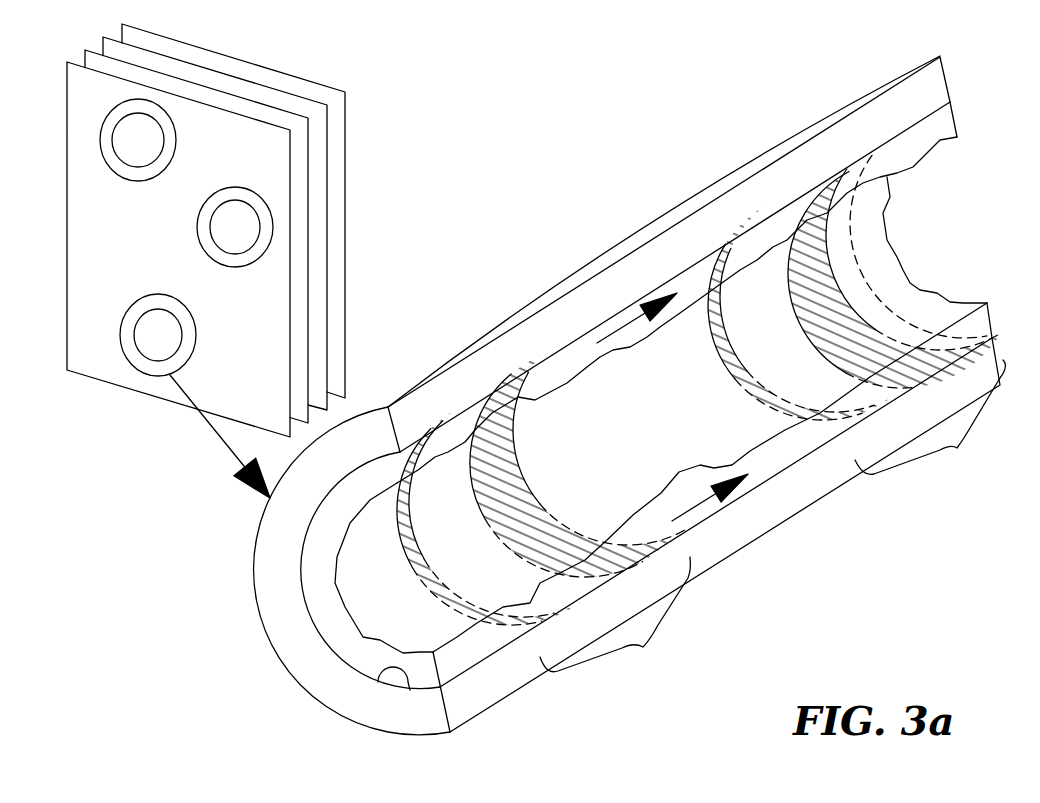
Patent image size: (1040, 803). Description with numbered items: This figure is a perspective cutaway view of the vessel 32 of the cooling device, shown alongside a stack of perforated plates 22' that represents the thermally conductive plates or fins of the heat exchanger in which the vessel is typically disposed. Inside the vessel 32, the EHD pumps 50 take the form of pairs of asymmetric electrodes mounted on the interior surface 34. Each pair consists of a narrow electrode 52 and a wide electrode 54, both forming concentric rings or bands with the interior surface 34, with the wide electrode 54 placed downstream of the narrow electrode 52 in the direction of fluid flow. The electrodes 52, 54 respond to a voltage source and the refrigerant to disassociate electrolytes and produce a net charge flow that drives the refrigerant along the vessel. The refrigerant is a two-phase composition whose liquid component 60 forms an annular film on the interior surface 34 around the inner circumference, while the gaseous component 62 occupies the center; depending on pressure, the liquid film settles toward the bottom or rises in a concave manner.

The stack of perforated plates 22' is at (204, 261).
The vessel 32 is at (285, 633).
The interior surface 34 is at (396, 650).
The EHD pumps 50 is at (772, 516).
The narrow electrode 52 is at (423, 563).
The wide electrode 54 is at (490, 483).
The liquid component 60 is at (362, 650).
The gaseous component 62 is at (945, 222).